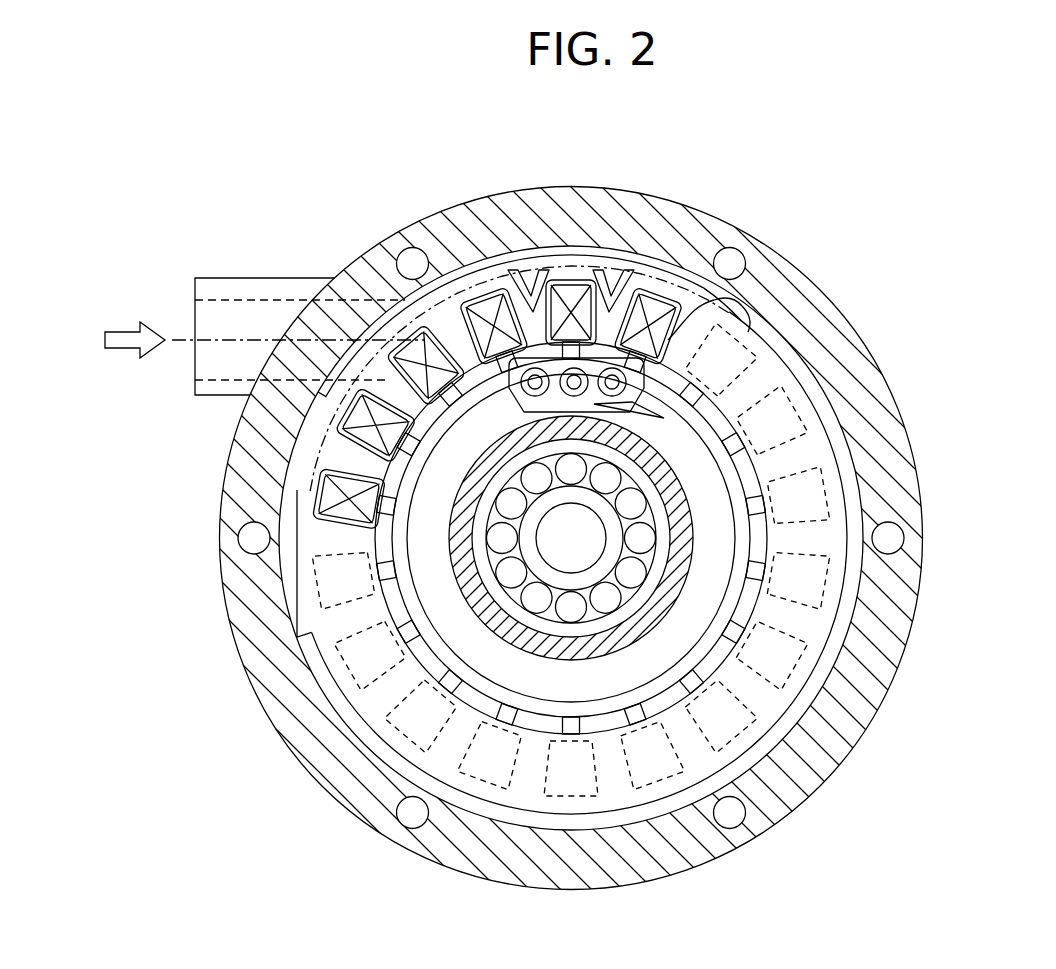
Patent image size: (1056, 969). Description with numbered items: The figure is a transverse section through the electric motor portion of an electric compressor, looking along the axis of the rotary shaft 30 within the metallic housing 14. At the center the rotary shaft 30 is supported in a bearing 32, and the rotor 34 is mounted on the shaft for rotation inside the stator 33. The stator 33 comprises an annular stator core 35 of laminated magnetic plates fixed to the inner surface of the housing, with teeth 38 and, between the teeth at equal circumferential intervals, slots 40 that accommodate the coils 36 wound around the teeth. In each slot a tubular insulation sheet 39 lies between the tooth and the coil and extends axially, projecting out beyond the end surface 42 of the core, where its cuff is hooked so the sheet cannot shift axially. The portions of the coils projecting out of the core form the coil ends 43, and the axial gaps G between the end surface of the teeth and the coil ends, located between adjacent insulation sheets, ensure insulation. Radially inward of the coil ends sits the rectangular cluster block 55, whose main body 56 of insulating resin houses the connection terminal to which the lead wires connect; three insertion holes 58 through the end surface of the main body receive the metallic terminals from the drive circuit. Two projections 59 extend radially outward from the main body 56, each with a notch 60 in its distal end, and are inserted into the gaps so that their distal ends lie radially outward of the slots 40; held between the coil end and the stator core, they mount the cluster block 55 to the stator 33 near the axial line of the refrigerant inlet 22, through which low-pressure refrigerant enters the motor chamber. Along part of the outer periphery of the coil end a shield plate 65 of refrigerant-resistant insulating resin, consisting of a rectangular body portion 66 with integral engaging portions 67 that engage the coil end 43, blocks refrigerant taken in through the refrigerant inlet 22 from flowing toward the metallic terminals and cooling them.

The housing 14 is at (923, 470).
The refrigerant inlet 22 is at (263, 335).
The rotary shaft 30 is at (590, 556).
The bearing 32 is at (657, 550).
The stator 33 is at (578, 228).
The rotor 34 is at (855, 615).
The stator core 35 is at (705, 282).
The coils 36 is at (662, 298).
The teeth 38 is at (414, 465).
The insulation sheet 39 is at (283, 560).
The slots 40 is at (445, 315).
The end surface 42 is at (335, 695).
The coil ends 43 is at (815, 455).
The cluster block 55 is at (646, 380).
The main body 56 is at (517, 404).
The insertion holes 58 is at (641, 415).
The projections 59 is at (512, 270).
The notch 60 is at (522, 270).
The shield plate 65 is at (378, 313).
The body portion 66 is at (335, 392).
The engaging portions 67 is at (410, 273).